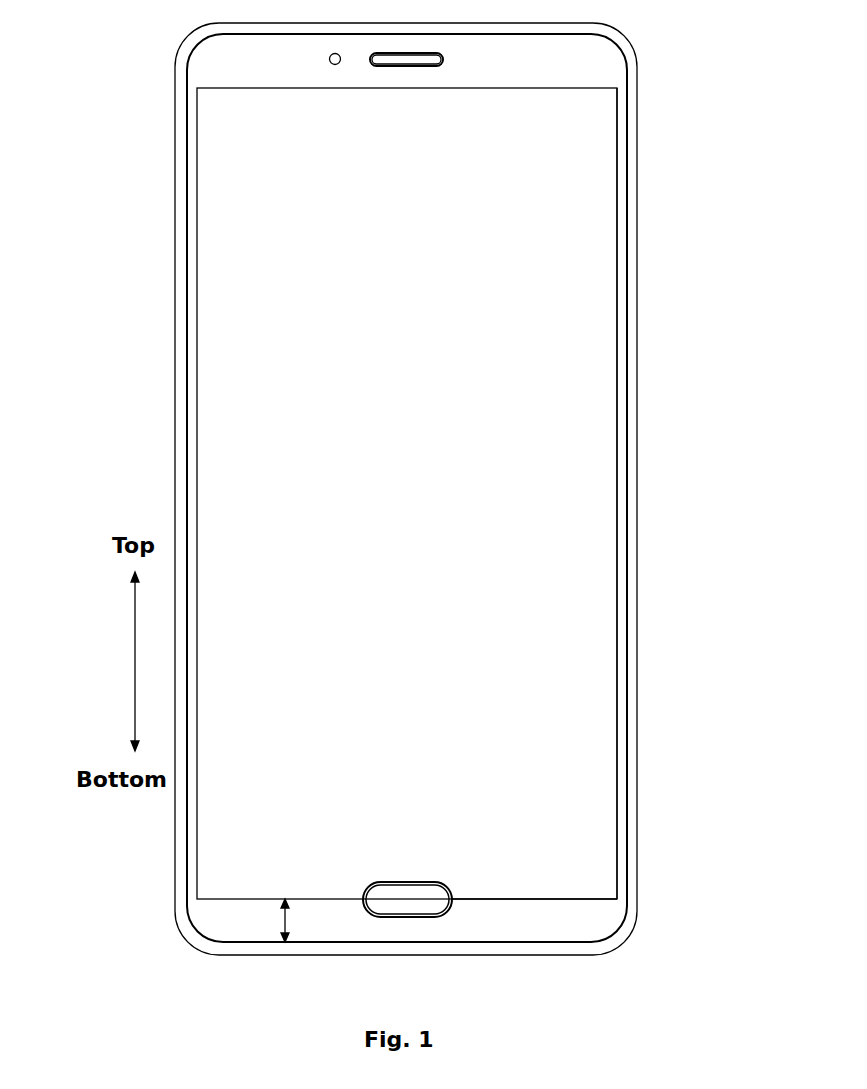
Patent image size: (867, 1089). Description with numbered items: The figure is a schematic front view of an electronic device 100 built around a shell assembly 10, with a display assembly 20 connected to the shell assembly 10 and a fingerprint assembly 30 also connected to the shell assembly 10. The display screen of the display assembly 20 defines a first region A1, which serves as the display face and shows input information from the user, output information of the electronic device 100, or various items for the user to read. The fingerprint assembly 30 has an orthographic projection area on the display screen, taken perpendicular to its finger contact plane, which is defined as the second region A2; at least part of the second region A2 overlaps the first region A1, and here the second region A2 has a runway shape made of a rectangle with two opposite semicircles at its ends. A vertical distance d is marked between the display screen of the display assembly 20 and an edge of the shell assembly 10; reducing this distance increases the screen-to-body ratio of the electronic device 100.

The electronic device 100 is at (128, 162).
The shell assembly 10 is at (176, 365).
The display assembly 20 is at (588, 465).
The first region A1 is at (617, 565).
The fingerprint assembly 30 is at (393, 897).
The second region A2 is at (445, 912).
The vertical distance d is at (272, 920).